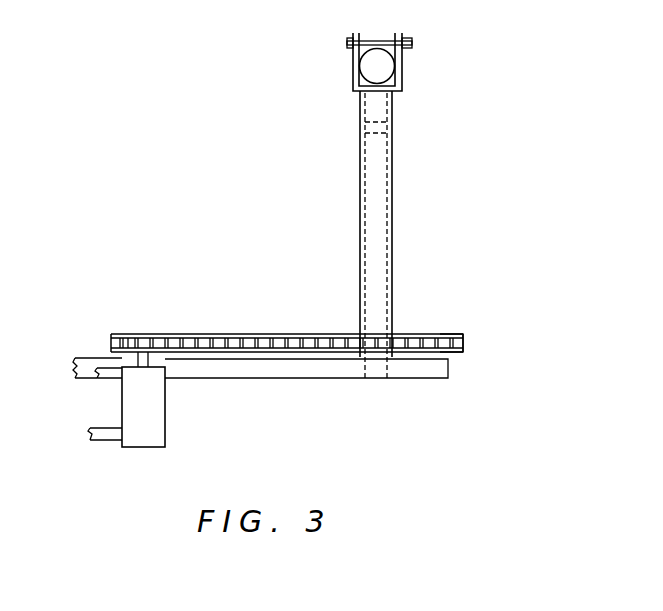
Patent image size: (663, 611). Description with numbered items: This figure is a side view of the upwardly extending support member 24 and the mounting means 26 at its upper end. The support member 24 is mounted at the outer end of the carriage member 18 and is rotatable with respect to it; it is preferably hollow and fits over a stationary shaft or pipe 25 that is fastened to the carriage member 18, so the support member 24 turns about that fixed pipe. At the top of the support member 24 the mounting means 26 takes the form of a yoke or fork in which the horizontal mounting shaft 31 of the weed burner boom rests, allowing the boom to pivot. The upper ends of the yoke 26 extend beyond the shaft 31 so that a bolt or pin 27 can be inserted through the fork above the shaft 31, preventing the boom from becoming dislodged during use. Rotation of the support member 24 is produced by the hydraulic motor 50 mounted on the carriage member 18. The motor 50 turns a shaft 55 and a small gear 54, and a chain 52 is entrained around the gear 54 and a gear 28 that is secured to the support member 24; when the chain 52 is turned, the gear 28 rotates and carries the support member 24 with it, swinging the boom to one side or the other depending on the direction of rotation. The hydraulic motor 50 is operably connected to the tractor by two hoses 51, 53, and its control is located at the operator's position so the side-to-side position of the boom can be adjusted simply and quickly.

The carriage member 18 is at (440, 373).
The support member 24 is at (392, 258).
The stationary shaft or pipe 25 is at (392, 175).
The mounting means 26 is at (355, 75).
The bolt or pin 27 is at (348, 43).
The gear 28 is at (463, 342).
The horizontal mounting shaft 31 is at (387, 68).
The hydraulic motor 50 is at (157, 429).
The hose 51 is at (103, 437).
The chain 52 is at (272, 332).
The hose 53 is at (107, 378).
The gear 54 is at (130, 343).
The shaft 55 is at (146, 356).